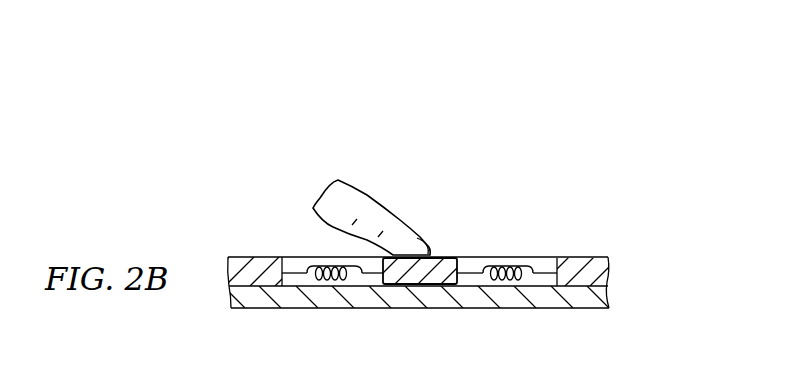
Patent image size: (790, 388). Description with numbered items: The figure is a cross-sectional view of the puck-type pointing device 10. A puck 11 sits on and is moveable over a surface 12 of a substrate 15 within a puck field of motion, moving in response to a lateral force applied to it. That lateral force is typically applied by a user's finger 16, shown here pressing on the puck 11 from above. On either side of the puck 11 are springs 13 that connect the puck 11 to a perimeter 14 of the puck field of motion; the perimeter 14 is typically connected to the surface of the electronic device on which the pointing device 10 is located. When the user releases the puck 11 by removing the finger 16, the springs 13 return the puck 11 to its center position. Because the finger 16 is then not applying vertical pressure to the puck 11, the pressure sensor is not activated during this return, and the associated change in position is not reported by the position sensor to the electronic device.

The puck-type pointing device 10 is at (272, 190).
The puck 11 is at (445, 257).
The surface 12 is at (298, 286).
The springs 13 is at (515, 257).
The perimeter 14 is at (587, 257).
The substrate 15 is at (477, 310).
The finger 16 is at (378, 206).